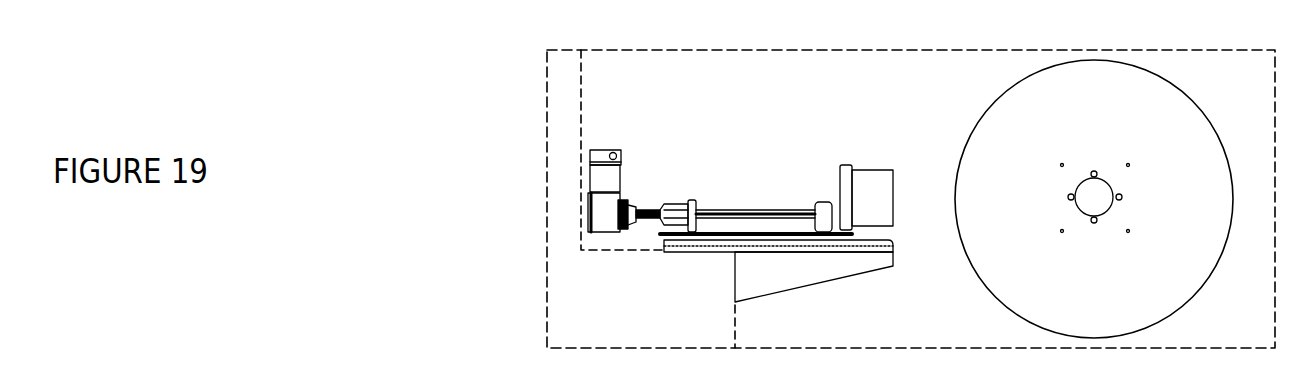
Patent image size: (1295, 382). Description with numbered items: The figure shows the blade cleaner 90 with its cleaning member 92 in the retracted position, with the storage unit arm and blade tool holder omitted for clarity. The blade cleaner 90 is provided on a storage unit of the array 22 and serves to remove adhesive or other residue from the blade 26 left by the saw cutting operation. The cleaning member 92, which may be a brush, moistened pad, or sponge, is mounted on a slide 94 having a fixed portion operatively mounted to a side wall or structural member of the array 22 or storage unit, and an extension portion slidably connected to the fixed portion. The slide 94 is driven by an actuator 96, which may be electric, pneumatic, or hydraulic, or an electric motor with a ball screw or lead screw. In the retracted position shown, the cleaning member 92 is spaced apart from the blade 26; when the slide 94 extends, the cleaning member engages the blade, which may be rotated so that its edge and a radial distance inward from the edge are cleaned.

The array 22 is at (560, 49).
The blade 26 is at (1188, 303).
The blade cleaner 90 is at (622, 182).
The cleaning member 92 is at (862, 175).
The slide 94 is at (773, 236).
The actuator 96 is at (636, 210).